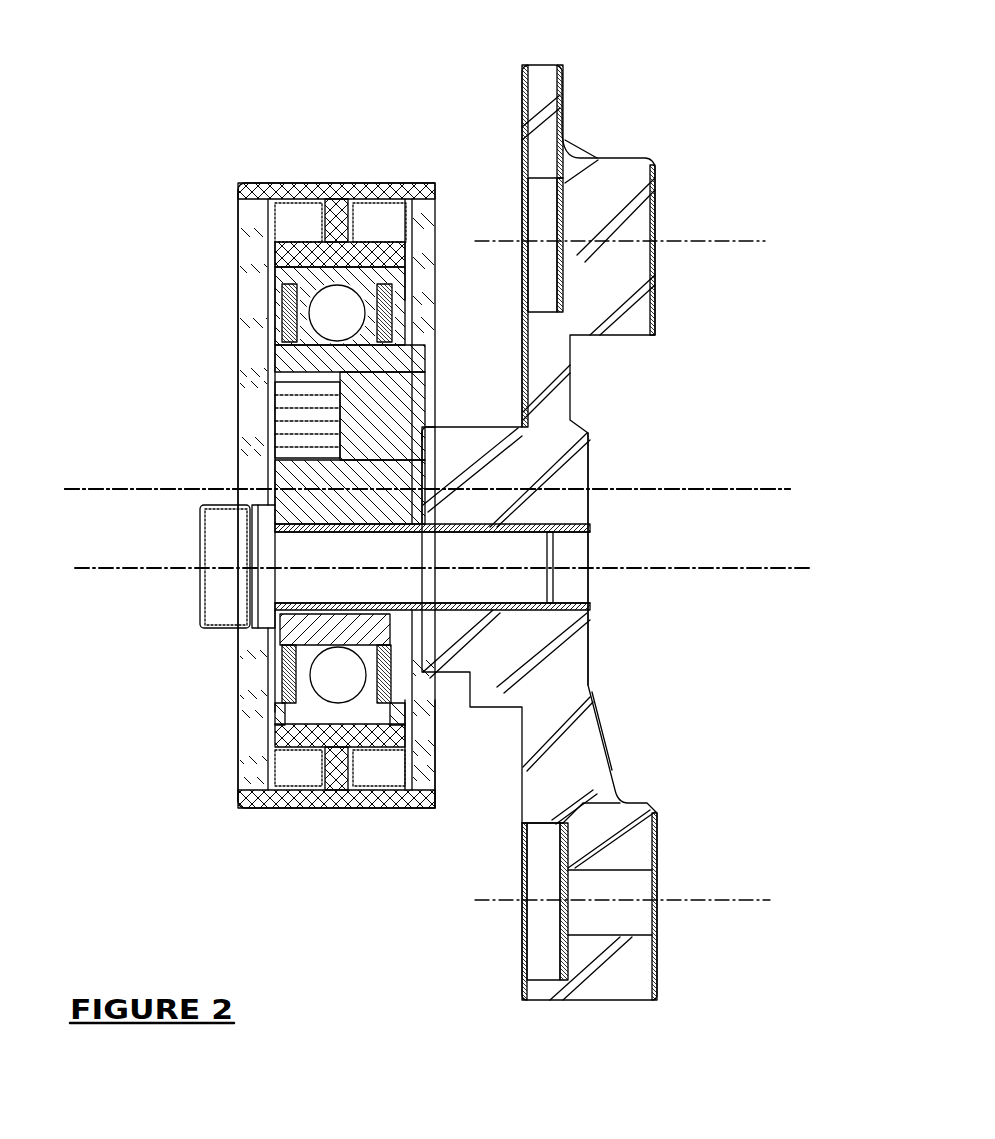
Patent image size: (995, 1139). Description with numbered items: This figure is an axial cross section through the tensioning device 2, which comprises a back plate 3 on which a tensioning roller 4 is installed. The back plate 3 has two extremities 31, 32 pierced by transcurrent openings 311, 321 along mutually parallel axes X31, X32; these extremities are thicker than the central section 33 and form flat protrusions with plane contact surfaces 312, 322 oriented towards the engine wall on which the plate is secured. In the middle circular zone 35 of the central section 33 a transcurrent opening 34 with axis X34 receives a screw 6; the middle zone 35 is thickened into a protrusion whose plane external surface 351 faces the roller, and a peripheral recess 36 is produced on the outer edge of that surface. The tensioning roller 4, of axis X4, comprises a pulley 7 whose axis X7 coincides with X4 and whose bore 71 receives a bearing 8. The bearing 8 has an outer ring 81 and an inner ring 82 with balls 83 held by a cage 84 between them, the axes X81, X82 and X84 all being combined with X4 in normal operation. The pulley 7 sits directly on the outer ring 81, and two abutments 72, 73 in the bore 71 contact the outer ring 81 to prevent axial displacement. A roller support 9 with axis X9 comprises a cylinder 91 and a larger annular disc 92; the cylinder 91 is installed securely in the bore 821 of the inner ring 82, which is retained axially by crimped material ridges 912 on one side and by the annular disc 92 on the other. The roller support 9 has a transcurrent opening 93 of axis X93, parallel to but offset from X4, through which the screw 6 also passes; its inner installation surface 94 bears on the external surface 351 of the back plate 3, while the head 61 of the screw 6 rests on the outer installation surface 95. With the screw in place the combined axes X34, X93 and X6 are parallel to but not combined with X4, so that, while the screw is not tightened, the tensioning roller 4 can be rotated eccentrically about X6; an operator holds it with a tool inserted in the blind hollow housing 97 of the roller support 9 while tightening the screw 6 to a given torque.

The tensioning device 2 is at (283, 92).
The back plate 3 is at (692, 168).
The tensioning roller 4 is at (246, 174).
The screw 6 is at (328, 585).
The pulley 7 is at (345, 710).
The bearing 8 is at (293, 735).
The roller support 9 is at (410, 473).
The extremity 31 is at (525, 130).
The extremity 32 is at (524, 905).
The central section 33 is at (570, 625).
The transcurrent opening 34 is at (510, 608).
The middle circular zone 35 is at (453, 640).
The peripheral recess 36 is at (443, 683).
The head 61 is at (212, 553).
The bore 71 is at (332, 730).
The abutment 72 is at (270, 716).
The abutment 73 is at (434, 808).
The outer ring 81 is at (295, 268).
The inner ring 82 is at (318, 642).
The balls 83 is at (278, 298).
The cage 84 is at (290, 650).
The cylinder 91 is at (304, 478).
The annular disc 92 is at (350, 198).
The transcurrent opening 93 is at (380, 556).
The inner installation surface 94 is at (425, 500).
The outer installation surface 95 is at (270, 503).
The hollow housing 97 is at (293, 427).
The transcurrent opening 311 is at (538, 213).
The plane contact surface 312 is at (662, 273).
The transcurrent opening 321 is at (623, 915).
The plane contact surface 322 is at (662, 830).
The plane external surface 351 is at (395, 445).
The bore 821 is at (363, 578).
The material ridges 912 is at (276, 368).
The axis of the tensioning roller X4 is at (427, 472).
The axis of the pulley X7 is at (427, 472).
The axis of the roller support X9 is at (442, 472).
The axis of the outer ring X81 is at (427, 508).
The axis of the inner ring X82 is at (427, 508).
The axis of the cage X84 is at (441, 508).
The axis of the screw X6 is at (442, 585).
The axis of the transcurrent opening of the roller support X93 is at (442, 585).
The axis of the transcurrent opening of the back plate X34 is at (448, 585).
The axis of the first extremity opening X31 is at (620, 228).
The axis of the second extremity opening X32 is at (624, 916).